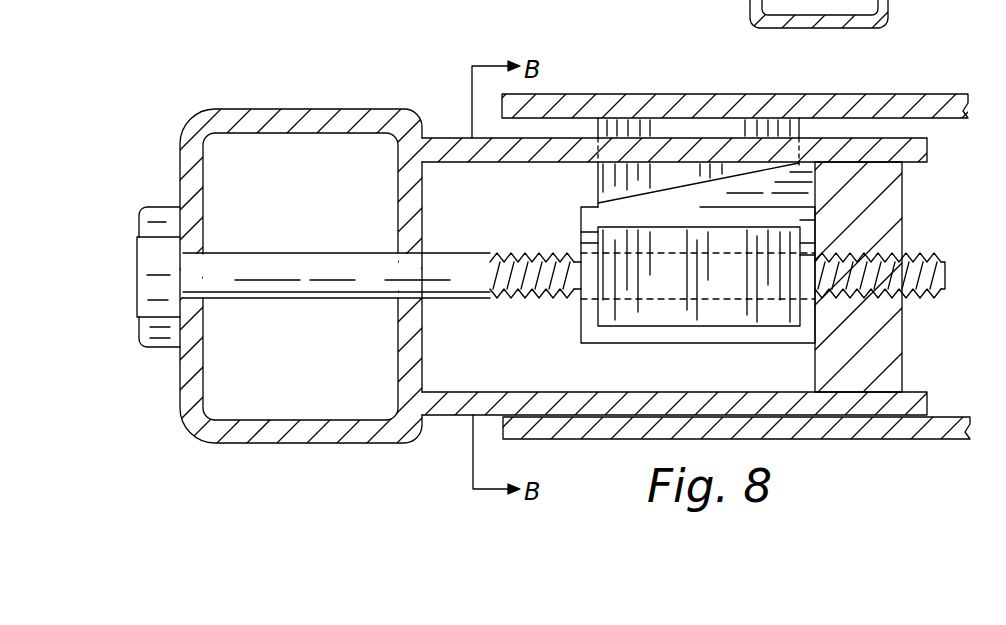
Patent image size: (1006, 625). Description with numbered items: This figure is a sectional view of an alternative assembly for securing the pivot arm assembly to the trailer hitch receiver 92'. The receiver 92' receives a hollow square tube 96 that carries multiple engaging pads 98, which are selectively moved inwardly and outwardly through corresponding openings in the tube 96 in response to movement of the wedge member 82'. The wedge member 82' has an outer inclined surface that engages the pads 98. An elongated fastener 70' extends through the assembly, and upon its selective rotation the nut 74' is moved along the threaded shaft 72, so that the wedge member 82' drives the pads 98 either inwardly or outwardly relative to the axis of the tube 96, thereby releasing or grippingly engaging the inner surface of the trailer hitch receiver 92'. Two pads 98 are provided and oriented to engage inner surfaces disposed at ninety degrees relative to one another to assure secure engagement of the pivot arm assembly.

The fastener 70' is at (154, 201).
The external threads 72 is at (305, 270).
The nut 74' is at (503, 312).
The wedge member 82' is at (699, 199).
The trailer hitch receiver 92' is at (705, 126).
The hollow square tube 96 is at (437, 135).
The engaging pads 98 is at (665, 128).